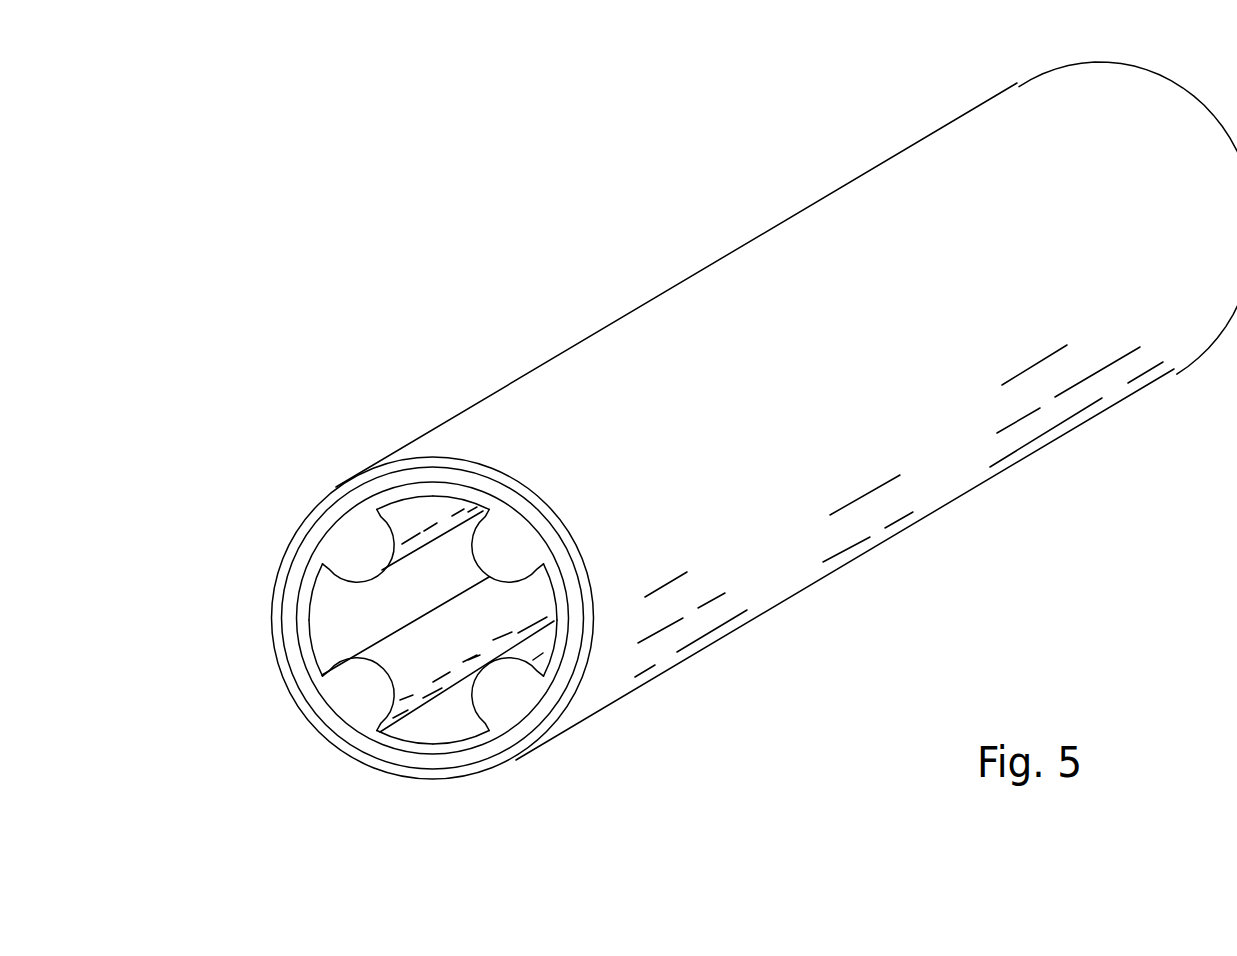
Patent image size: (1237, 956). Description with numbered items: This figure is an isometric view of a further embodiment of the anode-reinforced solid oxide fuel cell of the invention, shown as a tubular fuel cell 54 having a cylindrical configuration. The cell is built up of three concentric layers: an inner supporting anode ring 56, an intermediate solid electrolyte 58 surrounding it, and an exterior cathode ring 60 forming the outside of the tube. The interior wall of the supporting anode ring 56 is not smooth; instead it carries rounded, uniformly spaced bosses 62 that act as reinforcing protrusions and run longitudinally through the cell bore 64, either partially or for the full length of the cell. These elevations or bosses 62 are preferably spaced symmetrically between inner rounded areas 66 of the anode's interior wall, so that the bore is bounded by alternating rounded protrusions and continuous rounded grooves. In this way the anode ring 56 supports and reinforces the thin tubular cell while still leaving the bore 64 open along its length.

The tubular fuel cell 54 is at (558, 247).
The inner supporting anode ring 56 is at (430, 492).
The intermediate solid electrolyte 58 is at (565, 675).
The exterior cathode ring 60 is at (918, 196).
The bosses 62 is at (363, 688).
The cell bore 64 is at (418, 605).
The inner rounded areas 66 is at (343, 618).